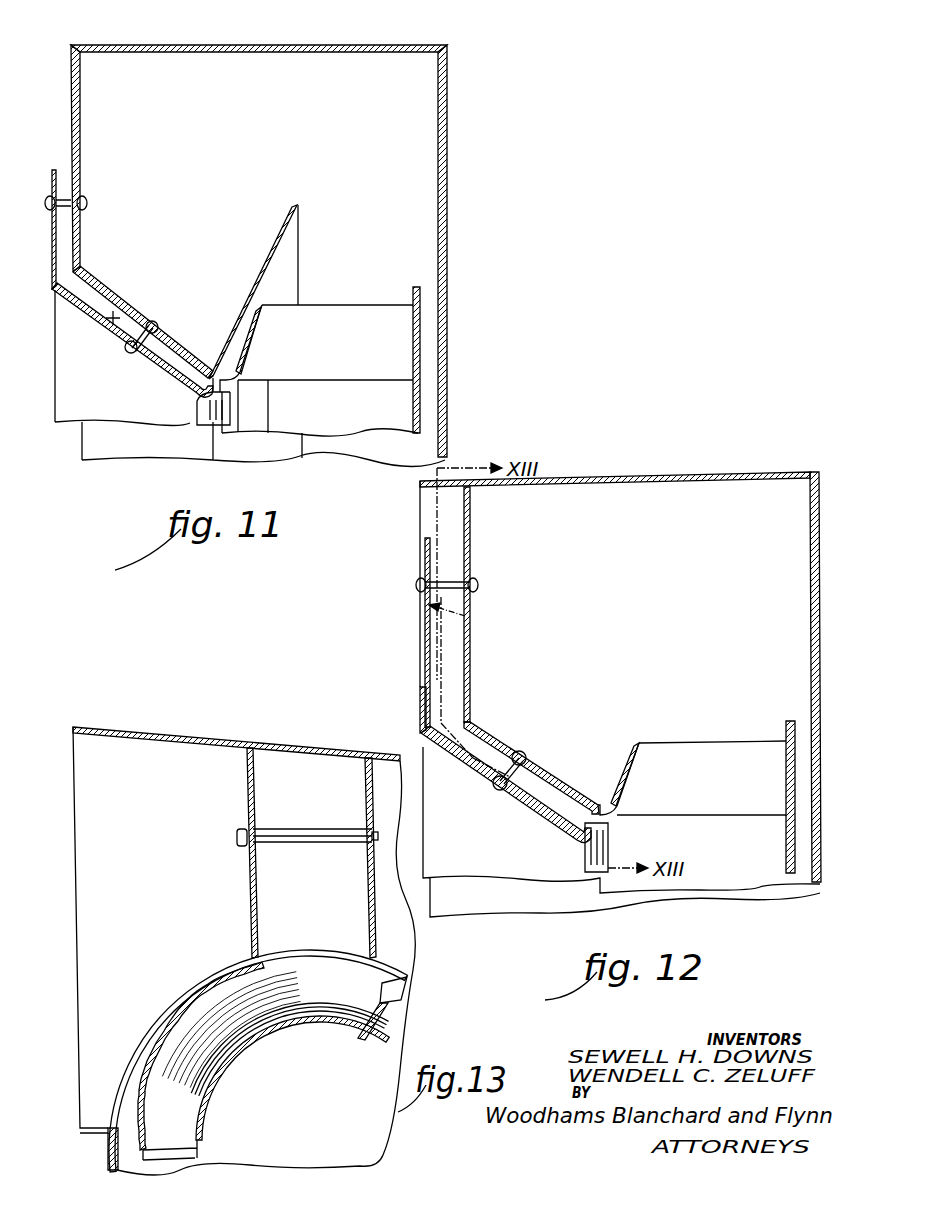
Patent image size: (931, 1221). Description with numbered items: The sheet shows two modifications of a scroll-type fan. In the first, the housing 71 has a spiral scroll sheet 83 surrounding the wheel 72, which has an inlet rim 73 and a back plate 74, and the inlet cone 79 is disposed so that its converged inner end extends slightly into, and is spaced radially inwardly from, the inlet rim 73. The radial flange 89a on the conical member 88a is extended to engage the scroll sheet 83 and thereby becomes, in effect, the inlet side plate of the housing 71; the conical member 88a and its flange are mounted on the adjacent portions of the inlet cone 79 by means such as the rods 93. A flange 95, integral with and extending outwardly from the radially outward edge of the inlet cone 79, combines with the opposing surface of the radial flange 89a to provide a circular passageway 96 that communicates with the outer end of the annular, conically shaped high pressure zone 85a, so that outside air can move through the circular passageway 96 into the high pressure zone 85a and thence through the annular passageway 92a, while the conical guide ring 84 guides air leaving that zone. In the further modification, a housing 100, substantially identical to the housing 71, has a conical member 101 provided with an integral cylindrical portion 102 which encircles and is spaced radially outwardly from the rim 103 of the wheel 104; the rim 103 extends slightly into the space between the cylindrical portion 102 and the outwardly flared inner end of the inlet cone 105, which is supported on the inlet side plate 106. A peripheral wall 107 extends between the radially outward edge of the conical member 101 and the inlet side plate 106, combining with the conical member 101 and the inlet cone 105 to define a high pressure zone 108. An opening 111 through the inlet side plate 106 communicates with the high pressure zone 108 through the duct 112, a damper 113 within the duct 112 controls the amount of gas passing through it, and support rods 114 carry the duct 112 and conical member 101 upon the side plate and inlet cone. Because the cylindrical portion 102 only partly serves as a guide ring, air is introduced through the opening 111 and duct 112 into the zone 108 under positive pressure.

In FIG. 11, the housing 71 is at (452, 117).
In FIG. 11, the scroll sheet 83 is at (362, 44).
In FIG. 11, the radial flange 89a is at (82, 166).
In FIG. 11, the conical member 88a is at (190, 358).
In FIG. 11, the flange 95 is at (52, 172).
In FIG. 11, the inlet cone 79 is at (163, 377).
In FIG. 11, the circular passageway 96 is at (62, 225).
In FIG. 11, the rods 93 is at (130, 340).
In FIG. 11, the high pressure zone 85a is at (175, 300).
In FIG. 11, the conical guide ring 84 is at (278, 241).
In FIG. 11, the wheel 72 is at (363, 298).
In FIG. 11, the inlet rim 73 is at (258, 331).
In FIG. 11, the back plate 74 is at (413, 397).
In FIG. 11, the annular passageway 92a is at (202, 398).
In FIG. 12, the housing 100 is at (579, 474).
In FIG. 13, the housing 100 is at (193, 723).
In FIG. 12, the opening 111 is at (424, 511).
In FIG. 12, the inlet side plate 106 is at (424, 630).
In FIG. 12, the peripheral wall 107 is at (437, 747).
In FIG. 13, the peripheral wall 107 is at (183, 1010).
In FIG. 12, the inlet cone 105 is at (543, 820).
In FIG. 13, the inlet cone 105 is at (308, 1020).
In FIG. 12, the duct 112 is at (474, 645).
In FIG. 13, the duct 112 is at (247, 780).
In FIG. 12, the conical member 101 is at (499, 737).
In FIG. 13, the conical member 101 is at (228, 975).
In FIG. 12, the support rods 114 is at (452, 578).
In FIG. 12, the damper 113 is at (472, 610).
In FIG. 13, the damper 113 is at (337, 843).
In FIG. 12, the high pressure zone 108 is at (493, 773).
In FIG. 12, the cylindrical portion 102 is at (590, 800).
In FIG. 12, the rim 103 is at (636, 752).
In FIG. 13, the rim 103 is at (391, 1002).
In FIG. 12, the wheel 104 is at (698, 735).
In FIG. 13, the wheel 104 is at (408, 998).